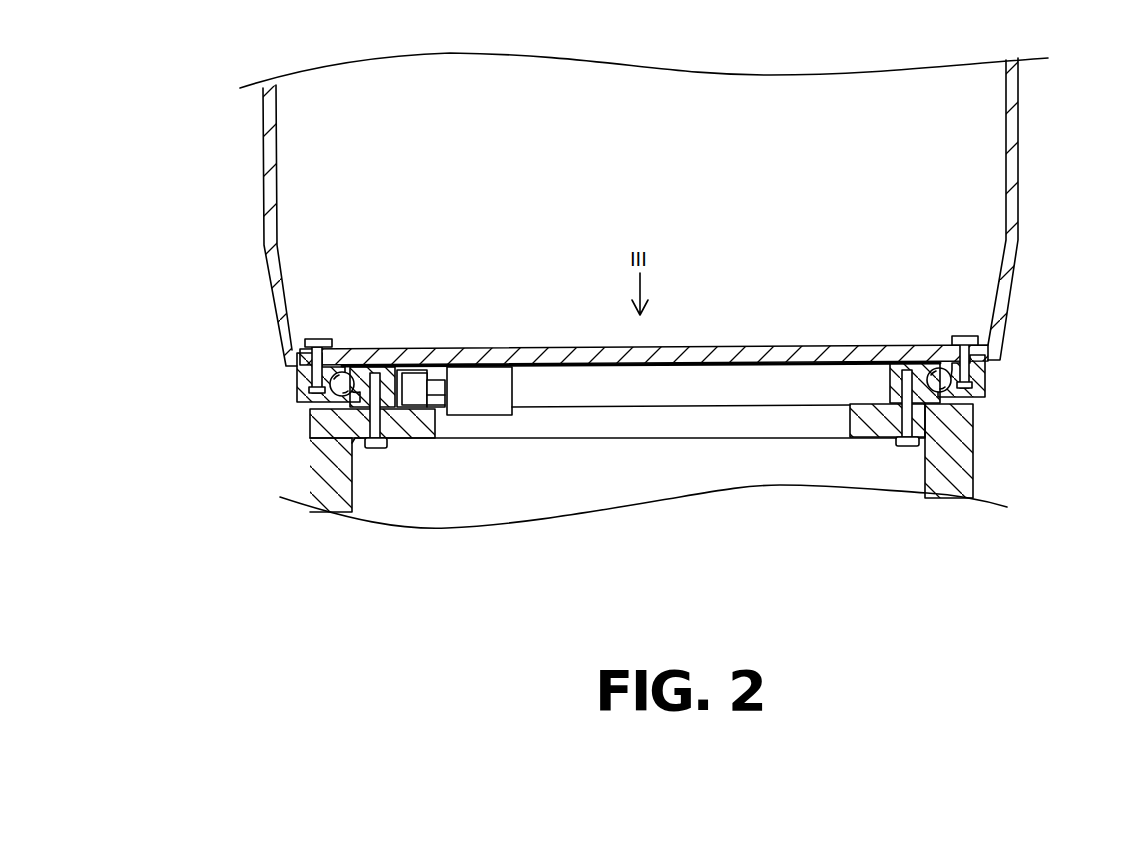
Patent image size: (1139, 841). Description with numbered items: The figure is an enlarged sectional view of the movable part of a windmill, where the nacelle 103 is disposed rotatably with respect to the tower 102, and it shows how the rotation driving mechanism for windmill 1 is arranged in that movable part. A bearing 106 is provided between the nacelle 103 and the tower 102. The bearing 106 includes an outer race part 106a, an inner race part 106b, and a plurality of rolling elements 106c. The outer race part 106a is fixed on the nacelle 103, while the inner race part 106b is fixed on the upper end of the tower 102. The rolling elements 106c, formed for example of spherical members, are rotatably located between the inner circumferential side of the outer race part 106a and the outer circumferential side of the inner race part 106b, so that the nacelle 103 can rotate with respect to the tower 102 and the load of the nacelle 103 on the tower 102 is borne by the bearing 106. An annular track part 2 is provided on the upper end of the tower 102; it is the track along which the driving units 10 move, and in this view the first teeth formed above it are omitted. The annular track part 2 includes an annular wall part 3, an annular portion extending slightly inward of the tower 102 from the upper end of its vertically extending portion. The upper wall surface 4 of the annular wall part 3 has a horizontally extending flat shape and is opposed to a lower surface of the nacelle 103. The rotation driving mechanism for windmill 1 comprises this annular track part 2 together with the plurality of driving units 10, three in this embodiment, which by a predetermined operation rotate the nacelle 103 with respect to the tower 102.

The rotation driving mechanism for windmill 1 is at (513, 465).
The annular track part 2 is at (428, 466).
The annular wall part 3 is at (462, 422).
The upper wall surface 4 is at (445, 383).
The driving unit 10 is at (527, 443).
The tower 102 is at (998, 476).
The nacelle 103 is at (1033, 160).
The bearing 106 is at (265, 410).
The outer race part 106a is at (297, 377).
The inner race part 106b is at (388, 370).
The rolling elements 106c is at (360, 358).